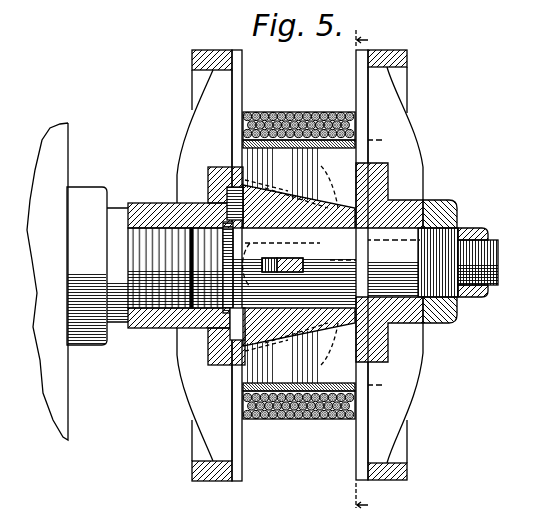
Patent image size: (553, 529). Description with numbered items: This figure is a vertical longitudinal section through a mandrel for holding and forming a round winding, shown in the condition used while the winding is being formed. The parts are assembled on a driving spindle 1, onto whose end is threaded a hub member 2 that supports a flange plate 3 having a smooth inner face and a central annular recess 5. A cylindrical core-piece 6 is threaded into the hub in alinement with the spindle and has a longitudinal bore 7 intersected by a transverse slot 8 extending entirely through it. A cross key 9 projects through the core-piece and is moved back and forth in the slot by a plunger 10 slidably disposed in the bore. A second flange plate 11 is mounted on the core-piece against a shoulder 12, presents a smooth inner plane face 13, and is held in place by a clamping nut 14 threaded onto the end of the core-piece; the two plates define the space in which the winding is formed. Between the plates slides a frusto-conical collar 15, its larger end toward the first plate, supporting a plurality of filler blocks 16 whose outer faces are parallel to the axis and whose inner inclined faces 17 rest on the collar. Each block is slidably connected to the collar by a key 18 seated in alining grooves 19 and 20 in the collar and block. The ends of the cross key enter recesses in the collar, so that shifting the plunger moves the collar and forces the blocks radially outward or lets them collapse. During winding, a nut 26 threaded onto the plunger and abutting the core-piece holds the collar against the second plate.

The spindle 1 is at (162, 203).
The hub member 2 is at (146, 325).
The flange plate 3 is at (196, 121).
The annular recess 5 is at (227, 192).
The core-piece 6 is at (200, 328).
The longitudinal bore 7 is at (243, 88).
The transverse slot 8 is at (275, 258).
The cross key 9 is at (286, 262).
The plunger 10 is at (500, 249).
The second flange plate 11 is at (418, 170).
The shoulder 12 is at (358, 259).
The inner plane face 13 is at (356, 88).
The clamping nut 14 is at (455, 204).
The collar 15 is at (350, 205).
The filler blocks 16 is at (350, 163).
The inner inclined face 17 is at (296, 197).
The key 18 is at (292, 259).
The groove 19 is at (291, 346).
The groove 20 is at (332, 228).
The nut 26 is at (487, 293).